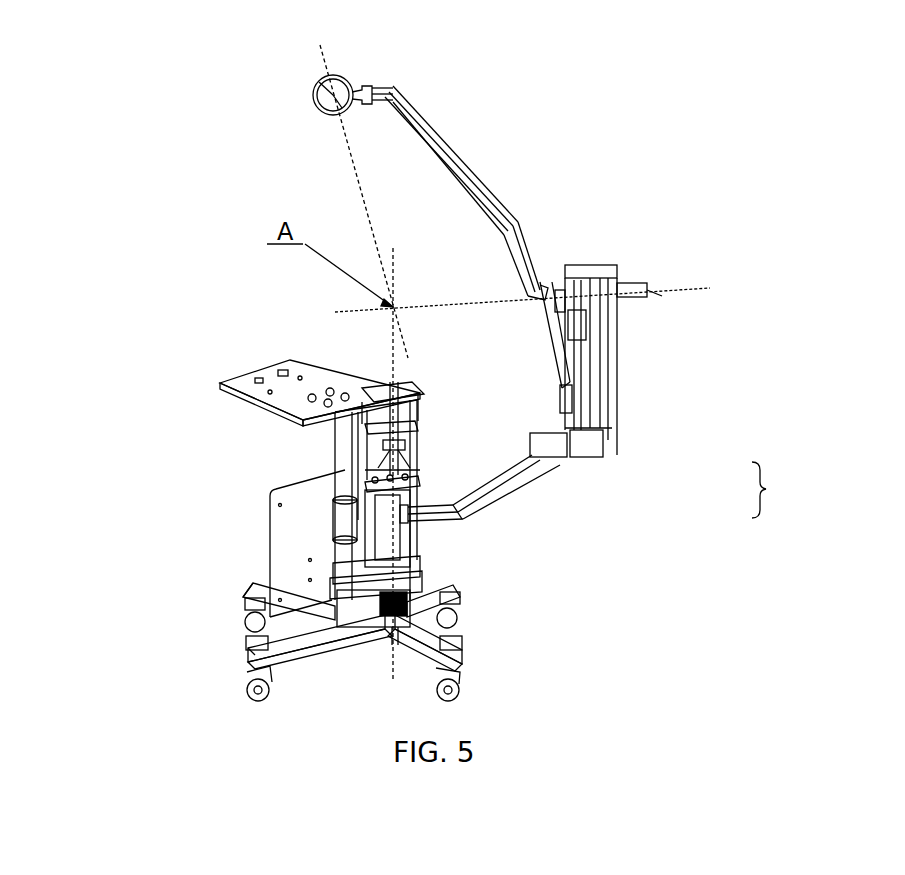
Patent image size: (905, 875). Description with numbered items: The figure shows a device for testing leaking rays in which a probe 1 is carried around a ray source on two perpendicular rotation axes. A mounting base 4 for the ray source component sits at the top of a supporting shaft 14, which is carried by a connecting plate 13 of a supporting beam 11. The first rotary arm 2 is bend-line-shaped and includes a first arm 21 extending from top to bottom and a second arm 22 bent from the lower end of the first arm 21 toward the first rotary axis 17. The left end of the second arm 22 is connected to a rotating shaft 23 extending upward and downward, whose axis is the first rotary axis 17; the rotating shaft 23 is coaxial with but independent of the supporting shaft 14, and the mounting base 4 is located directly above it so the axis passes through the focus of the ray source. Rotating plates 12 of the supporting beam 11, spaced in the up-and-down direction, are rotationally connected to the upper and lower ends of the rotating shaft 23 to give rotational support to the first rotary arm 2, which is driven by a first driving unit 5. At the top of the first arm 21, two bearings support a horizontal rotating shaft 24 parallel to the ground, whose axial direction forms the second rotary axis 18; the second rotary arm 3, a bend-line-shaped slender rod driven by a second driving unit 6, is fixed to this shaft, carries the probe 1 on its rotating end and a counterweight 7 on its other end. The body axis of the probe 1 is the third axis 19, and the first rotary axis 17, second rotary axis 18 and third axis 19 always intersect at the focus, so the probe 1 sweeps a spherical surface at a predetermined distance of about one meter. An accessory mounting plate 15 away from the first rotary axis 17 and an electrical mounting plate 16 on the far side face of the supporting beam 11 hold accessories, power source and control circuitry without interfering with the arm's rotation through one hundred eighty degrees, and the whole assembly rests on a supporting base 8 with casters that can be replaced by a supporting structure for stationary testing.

The probe 1 is at (313, 90).
The third axis 19 is at (330, 60).
The second rotary arm 3 is at (508, 210).
The second rotary axis 18 is at (670, 287).
The counterweight 7 is at (557, 340).
The horizontal rotating shaft 24 is at (578, 292).
The first arm 21 is at (578, 390).
The second driving unit 6 is at (558, 440).
The second arm 22 is at (522, 482).
The rotating shaft 23 is at (405, 533).
The first rotary arm 2 is at (769, 490).
The supporting base 8 is at (400, 632).
The first rotary axis 17 is at (392, 347).
The accessory mounting plate 15 is at (300, 388).
The connecting plate 13 is at (335, 392).
The mounting base 4 is at (360, 390).
The supporting shaft 14 is at (400, 404).
The supporting beam 11 is at (340, 462).
The rotating plate 12 is at (340, 470).
The electrical mounting plate 16 is at (297, 524).
The first driving unit 5 is at (335, 527).